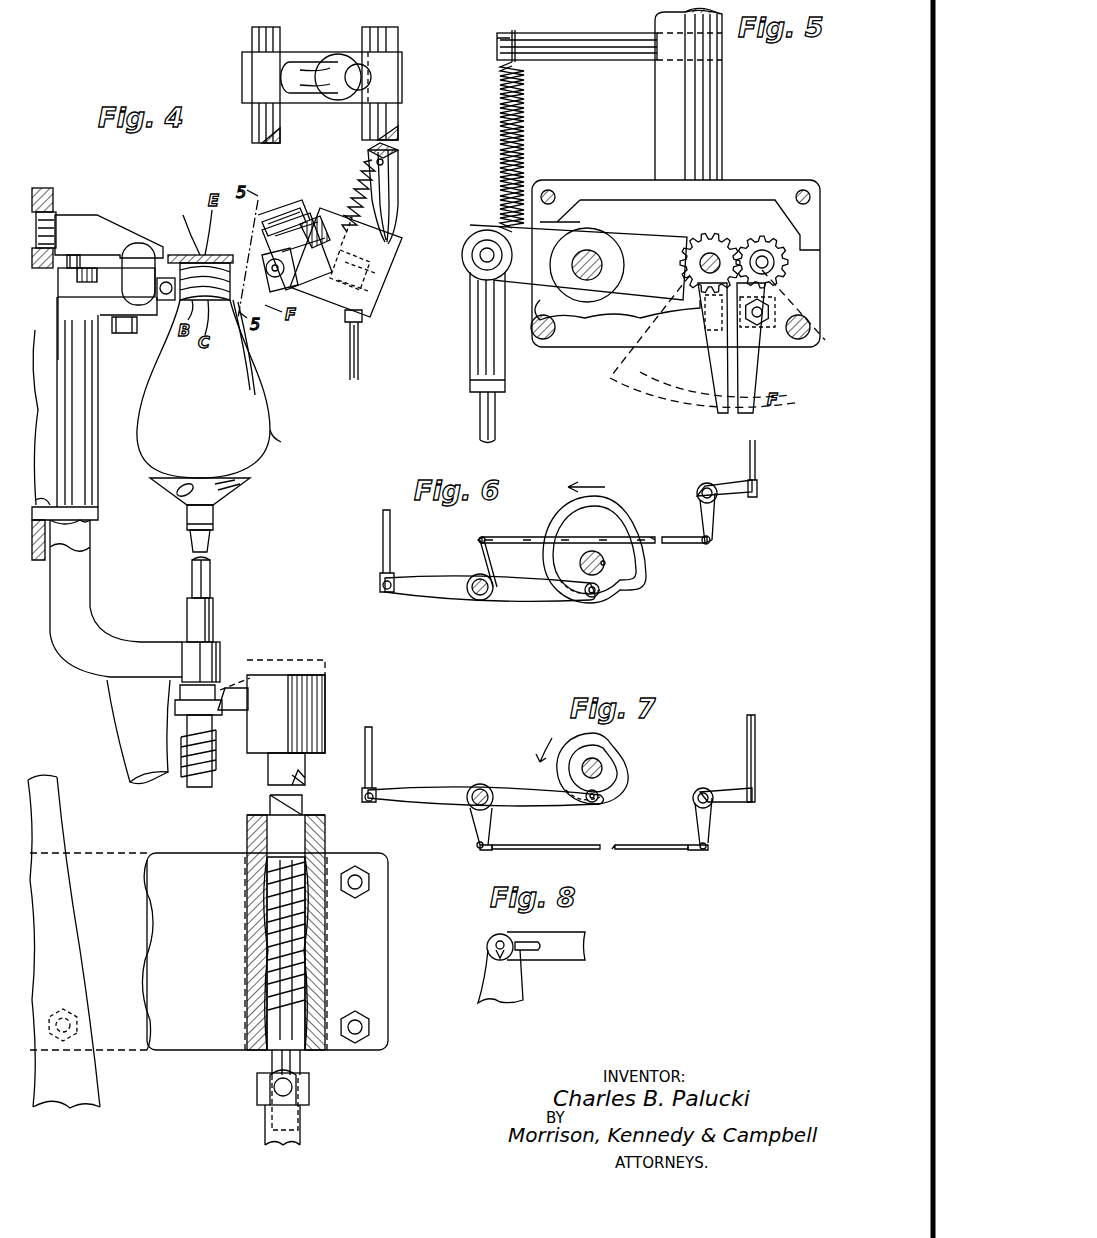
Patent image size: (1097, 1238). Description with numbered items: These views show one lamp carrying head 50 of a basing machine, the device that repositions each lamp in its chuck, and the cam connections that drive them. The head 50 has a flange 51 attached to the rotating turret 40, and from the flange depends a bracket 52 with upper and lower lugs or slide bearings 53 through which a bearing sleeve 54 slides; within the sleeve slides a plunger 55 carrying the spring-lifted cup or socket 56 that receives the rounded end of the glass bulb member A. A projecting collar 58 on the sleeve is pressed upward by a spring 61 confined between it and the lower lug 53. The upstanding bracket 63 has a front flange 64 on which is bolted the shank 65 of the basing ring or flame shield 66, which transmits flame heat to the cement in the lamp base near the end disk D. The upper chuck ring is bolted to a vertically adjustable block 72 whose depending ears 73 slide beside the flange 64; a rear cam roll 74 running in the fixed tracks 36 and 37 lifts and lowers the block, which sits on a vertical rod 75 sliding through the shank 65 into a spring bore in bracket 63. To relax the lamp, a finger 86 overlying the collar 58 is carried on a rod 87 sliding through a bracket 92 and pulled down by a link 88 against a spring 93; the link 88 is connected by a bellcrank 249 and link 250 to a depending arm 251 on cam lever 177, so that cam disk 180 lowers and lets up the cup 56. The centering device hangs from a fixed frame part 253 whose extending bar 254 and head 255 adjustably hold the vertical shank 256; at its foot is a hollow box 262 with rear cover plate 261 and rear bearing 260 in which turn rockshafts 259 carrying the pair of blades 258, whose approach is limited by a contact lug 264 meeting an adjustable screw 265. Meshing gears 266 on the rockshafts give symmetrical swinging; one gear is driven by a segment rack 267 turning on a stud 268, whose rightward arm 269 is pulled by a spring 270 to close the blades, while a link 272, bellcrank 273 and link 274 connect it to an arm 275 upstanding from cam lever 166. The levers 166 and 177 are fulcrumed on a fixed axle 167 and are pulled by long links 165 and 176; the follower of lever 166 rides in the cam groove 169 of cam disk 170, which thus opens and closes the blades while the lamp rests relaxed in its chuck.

In FIG. 4, the fixed frame part 253 is at (250, 77).
In FIG. 4, the extending bar 254 is at (306, 64).
In FIG. 4, the head 255 is at (404, 82).
In FIG. 4, the vertical shank 256 is at (400, 188).
In FIG. 5, the vertical shank 256 is at (722, 124).
In FIG. 4, the centering fingers or blades 258 is at (268, 302).
In FIG. 5, the centering fingers or blades 258 is at (745, 395).
In FIG. 4, the rockshafts 259 is at (292, 232).
In FIG. 5, the rockshafts 259 is at (762, 250).
In FIG. 4, the rear bearing 260 is at (305, 245).
In FIG. 4, the rear cover plate 261 is at (322, 220).
In FIG. 5, the rear cover plate 261 is at (592, 335).
In FIG. 4, the hollow body or box 262 is at (383, 287).
In FIG. 5, the hollow body or box 262 is at (600, 190).
In FIG. 5, the contact lug 264 is at (695, 335).
In FIG. 5, the adjustable screw 265 is at (743, 348).
In FIG. 5, the gear 266 is at (710, 250).
In FIG. 5, the segment rack 267 is at (578, 262).
In FIG. 5, the stud 268 is at (598, 252).
In FIG. 5, the rightward arm 269 is at (506, 255).
In FIG. 5, the spring 270 is at (526, 118).
In FIG. 4, the link 272 is at (359, 355).
In FIG. 5, the link 272 is at (498, 418).
In FIG. 6, the link 272 is at (748, 456).
In FIG. 6, the bellcrank 273 is at (735, 505).
In FIG. 6, the link 274 is at (540, 527).
In FIG. 8, the link 274 is at (555, 930).
In FIG. 6, the arm 275 is at (478, 558).
In FIG. 8, the arm 275 is at (520, 986).
In FIG. 4, the upper fixed circumferential track 36 is at (46, 188).
In FIG. 4, the lower fixed circumferential track 37 is at (44, 268).
In FIG. 4, the turret 40 is at (40, 560).
In FIG. 4, the head 50 is at (78, 692).
In FIG. 4, the flange 51 is at (43, 492).
In FIG. 4, the bracket 52 is at (116, 598).
In FIG. 4, the lugs or slide bearings 53 is at (222, 660).
In FIG. 4, the bearing sleeve 54 is at (215, 622).
In FIG. 4, the plunger 55 is at (212, 572).
In FIG. 4, the cup, ring or socket 56 is at (232, 493).
In FIG. 4, the projecting collar 58 is at (230, 735).
In FIG. 4, the spring 61 is at (208, 786).
In FIG. 4, the upstanding bracket 63 is at (65, 408).
In FIG. 4, the front flange 64 is at (108, 338).
In FIG. 4, the shank 65 is at (106, 282).
In FIG. 4, the ring member 66 is at (166, 300).
In FIG. 4, the vertically adjustable block 72 is at (110, 223).
In FIG. 4, the depending ears 73 is at (138, 274).
In FIG. 4, the stud or cam roll 74 is at (58, 222).
In FIG. 4, the vertical rod 75 is at (74, 255).
In FIG. 4, the finger 86 is at (272, 722).
In FIG. 4, the rod 87 is at (302, 1063).
In FIG. 4, the link 88 is at (305, 1123).
In FIG. 7, the link 88 is at (757, 760).
In FIG. 4, the bracket 92 is at (388, 956).
In FIG. 4, the spring 93 is at (258, 968).
In FIG. 6, the long link 165 is at (388, 548).
In FIG. 6, the cam lever 166 is at (490, 588).
In FIG. 6, the fixed stud or fulcrum axle 167 is at (481, 596).
In FIG. 7, the fixed stud or fulcrum axle 167 is at (483, 785).
In FIG. 6, the cam groove 169 is at (625, 518).
In FIG. 6, the cam disk 170 is at (636, 580).
In FIG. 7, the long link 176 is at (374, 757).
In FIG. 7, the cam lever 177 is at (486, 795).
In FIG. 7, the cam disk 180 is at (622, 768).
In FIG. 7, the bellcrank 249 is at (722, 830).
In FIG. 7, the link 250 is at (614, 845).
In FIG. 7, the depending arm 251 is at (498, 838).
In FIG. 4, the glass container or bulb member A is at (215, 370).
In FIG. 4, the metallic button or disk D is at (200, 230).